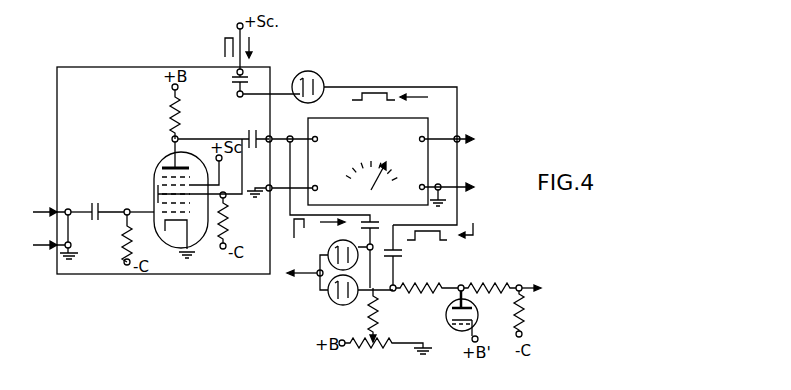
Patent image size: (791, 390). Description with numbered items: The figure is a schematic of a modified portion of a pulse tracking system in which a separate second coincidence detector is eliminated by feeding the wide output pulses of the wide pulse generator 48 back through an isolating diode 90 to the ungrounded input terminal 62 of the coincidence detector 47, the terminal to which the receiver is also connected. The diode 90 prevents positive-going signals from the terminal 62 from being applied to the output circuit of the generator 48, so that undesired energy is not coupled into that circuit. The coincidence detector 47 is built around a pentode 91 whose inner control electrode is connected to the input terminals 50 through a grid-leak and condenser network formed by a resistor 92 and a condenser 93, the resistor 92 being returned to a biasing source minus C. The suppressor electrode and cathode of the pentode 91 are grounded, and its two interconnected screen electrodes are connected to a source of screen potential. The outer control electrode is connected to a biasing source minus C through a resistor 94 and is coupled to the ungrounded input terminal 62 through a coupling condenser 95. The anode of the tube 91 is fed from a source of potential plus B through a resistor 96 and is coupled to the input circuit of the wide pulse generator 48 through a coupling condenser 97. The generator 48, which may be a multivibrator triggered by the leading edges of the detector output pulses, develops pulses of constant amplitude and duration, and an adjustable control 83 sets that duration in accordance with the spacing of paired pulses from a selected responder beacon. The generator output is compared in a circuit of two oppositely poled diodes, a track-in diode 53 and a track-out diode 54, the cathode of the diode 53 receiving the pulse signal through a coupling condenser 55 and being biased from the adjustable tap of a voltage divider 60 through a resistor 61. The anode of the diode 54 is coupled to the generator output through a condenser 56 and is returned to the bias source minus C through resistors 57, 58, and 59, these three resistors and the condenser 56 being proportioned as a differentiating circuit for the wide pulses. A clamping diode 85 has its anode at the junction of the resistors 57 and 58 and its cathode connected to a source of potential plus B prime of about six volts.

The coincidence detector 47 is at (147, 67).
The wide pulse generator 48 is at (308, 120).
The input terminals 50 is at (64, 233).
The track-in diode 53 is at (326, 245).
The track-out diode 54 is at (330, 302).
The coupling condenser 55 is at (378, 227).
The condenser 56 is at (405, 252).
The resistor 57 is at (413, 293).
The resistor 58 is at (492, 283).
The resistor 59 is at (525, 313).
The voltage divider 60 is at (371, 345).
The resistor 61 is at (370, 311).
The input terminals 62 is at (230, 41).
The adjustable control 83 is at (384, 186).
The diode 85 is at (447, 318).
The isolating diode 90 is at (320, 77).
The pentode 91 is at (171, 152).
The resistor 92 is at (125, 229).
The condenser 93 is at (93, 201).
The resistor 94 is at (228, 225).
The coupling condenser 95 is at (231, 81).
The resistor 96 is at (178, 118).
The coupling condenser 97 is at (252, 149).